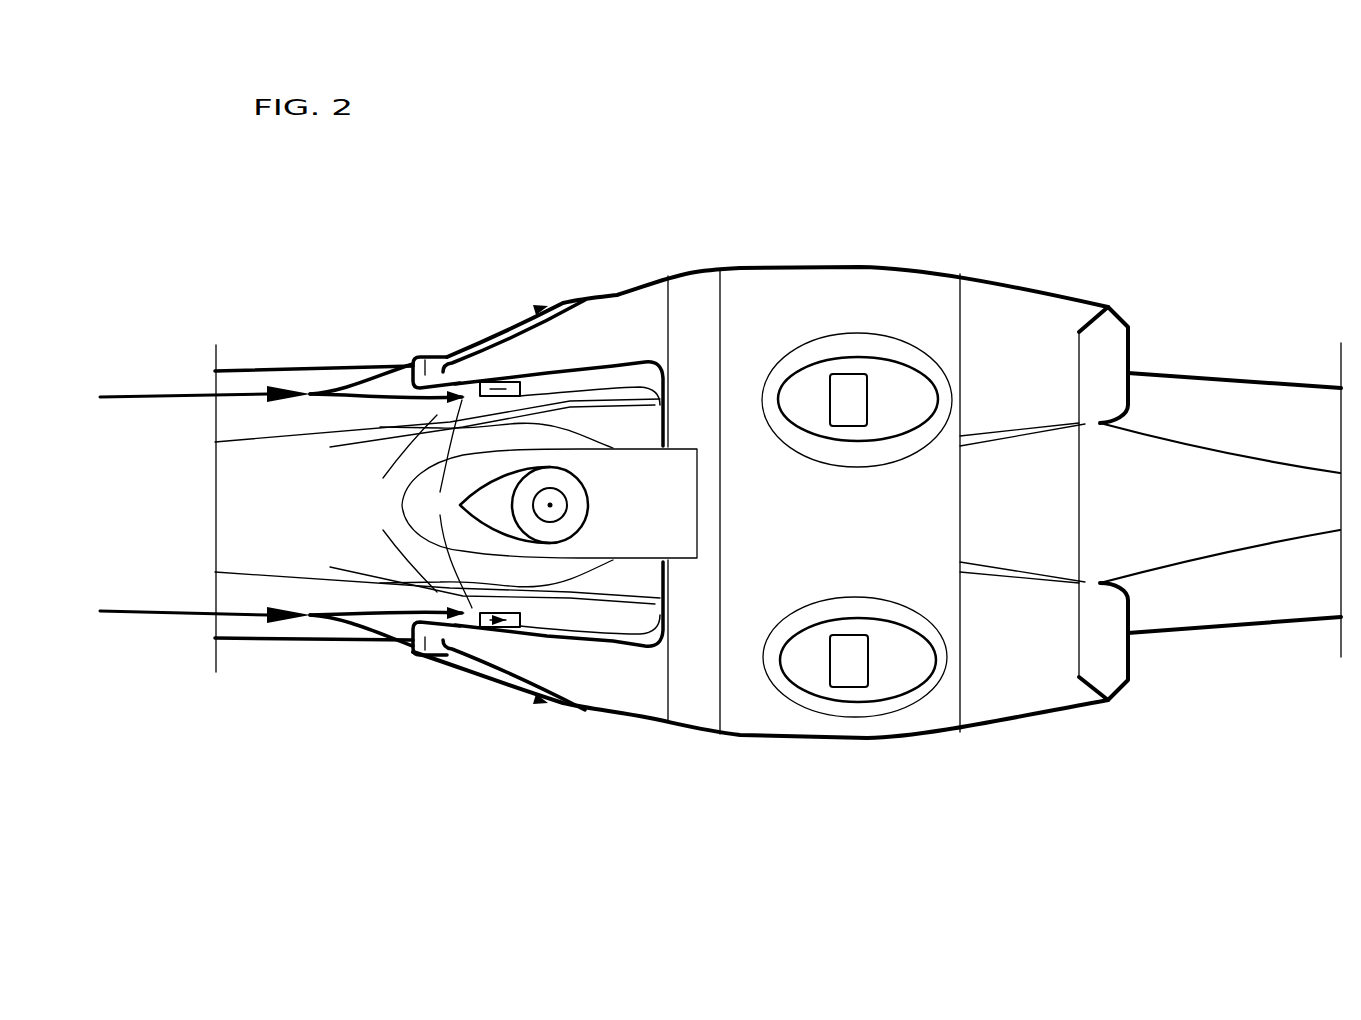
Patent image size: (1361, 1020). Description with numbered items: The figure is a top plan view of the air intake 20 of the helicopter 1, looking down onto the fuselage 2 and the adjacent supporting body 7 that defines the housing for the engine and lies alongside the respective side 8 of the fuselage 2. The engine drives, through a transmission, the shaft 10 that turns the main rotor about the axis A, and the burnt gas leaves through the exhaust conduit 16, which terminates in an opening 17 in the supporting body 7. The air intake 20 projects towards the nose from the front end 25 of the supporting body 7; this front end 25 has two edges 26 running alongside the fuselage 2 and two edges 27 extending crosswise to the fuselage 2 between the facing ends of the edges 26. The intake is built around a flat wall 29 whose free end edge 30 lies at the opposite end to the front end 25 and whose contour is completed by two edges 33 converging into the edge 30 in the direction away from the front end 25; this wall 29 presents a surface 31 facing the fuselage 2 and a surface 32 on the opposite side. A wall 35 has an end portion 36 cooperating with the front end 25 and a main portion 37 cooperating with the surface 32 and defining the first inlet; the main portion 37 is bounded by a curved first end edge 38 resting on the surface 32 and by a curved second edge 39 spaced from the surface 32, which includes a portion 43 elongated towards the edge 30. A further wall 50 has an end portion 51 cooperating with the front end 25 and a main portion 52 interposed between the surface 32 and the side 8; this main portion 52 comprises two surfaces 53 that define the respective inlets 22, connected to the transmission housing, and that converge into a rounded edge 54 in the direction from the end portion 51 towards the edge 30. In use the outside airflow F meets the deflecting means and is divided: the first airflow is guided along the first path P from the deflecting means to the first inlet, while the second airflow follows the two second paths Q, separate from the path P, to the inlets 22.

The helicopter 1 is at (944, 208).
The fuselage 2 is at (1297, 605).
The supporting body 7 is at (1040, 700).
The sides 8 is at (235, 367).
The shaft 10 is at (562, 505).
The exhaust conduit 16 is at (1100, 330).
The opening 17 is at (1143, 345).
The air intake 20 is at (400, 324).
The inlets 22 is at (500, 380).
The front end 25 is at (676, 309).
The edges 26 is at (670, 388).
The edges 27 is at (670, 407).
The flat wall 29 is at (410, 355).
The free end edge 30 is at (452, 408).
The surface 31 is at (429, 410).
The surface 32 is at (430, 356).
The edges 33 is at (457, 504).
The wall 35 is at (632, 272).
The end portion 36 is at (660, 390).
The main portion 37 is at (603, 330).
The curved first end edge 38 is at (590, 340).
The curved second edge 39 is at (575, 285).
The portion 43 is at (563, 370).
The wall 50 is at (573, 384).
The end portion 51 is at (700, 603).
The main portion 52 is at (670, 390).
The surfaces 53 is at (518, 378).
The rounded edge 54 is at (487, 316).
The axis A is at (551, 504).
The airflow F is at (138, 386).
The first path P is at (458, 352).
The second paths Q is at (365, 601).